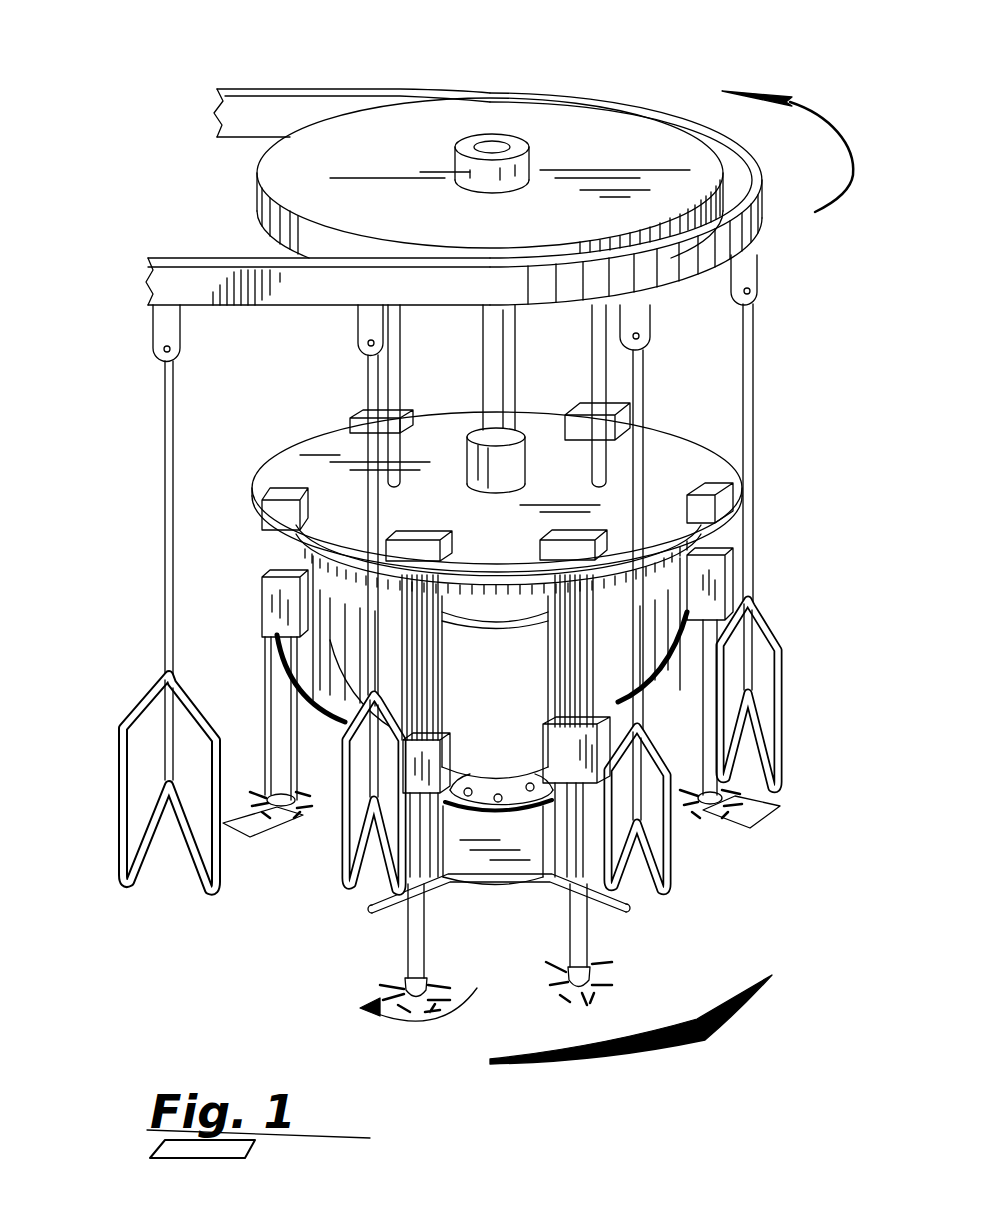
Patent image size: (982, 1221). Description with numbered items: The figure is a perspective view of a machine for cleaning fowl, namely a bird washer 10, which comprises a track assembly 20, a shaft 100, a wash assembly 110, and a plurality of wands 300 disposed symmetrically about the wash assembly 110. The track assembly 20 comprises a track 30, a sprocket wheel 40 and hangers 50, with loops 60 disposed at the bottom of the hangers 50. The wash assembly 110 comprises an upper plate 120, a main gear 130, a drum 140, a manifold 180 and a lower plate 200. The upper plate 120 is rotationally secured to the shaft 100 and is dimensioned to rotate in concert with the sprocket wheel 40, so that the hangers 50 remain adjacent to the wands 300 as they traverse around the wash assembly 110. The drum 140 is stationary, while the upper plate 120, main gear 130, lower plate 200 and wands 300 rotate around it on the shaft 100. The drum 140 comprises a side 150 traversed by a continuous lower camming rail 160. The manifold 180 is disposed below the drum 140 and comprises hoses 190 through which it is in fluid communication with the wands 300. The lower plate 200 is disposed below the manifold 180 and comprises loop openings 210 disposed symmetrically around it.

The bird washer 10 is at (150, 164).
The track assembly 20 is at (676, 83).
The track 30 is at (313, 90).
The sprocket wheel 40 is at (583, 137).
The hangers 50 is at (165, 558).
The loops 60 is at (93, 878).
The shaft 100 is at (500, 367).
The wash assembly 110 is at (540, 446).
The upper plate 120 is at (676, 457).
The main gear 130 is at (730, 590).
The drum 140 is at (530, 800).
The side 150 is at (527, 678).
The lower camming rail 160 is at (323, 677).
The manifold 180 is at (487, 800).
The hoses 190 is at (677, 667).
The lower plate 200 is at (672, 865).
The loop openings 210 is at (730, 798).
The wands 300 is at (437, 753).